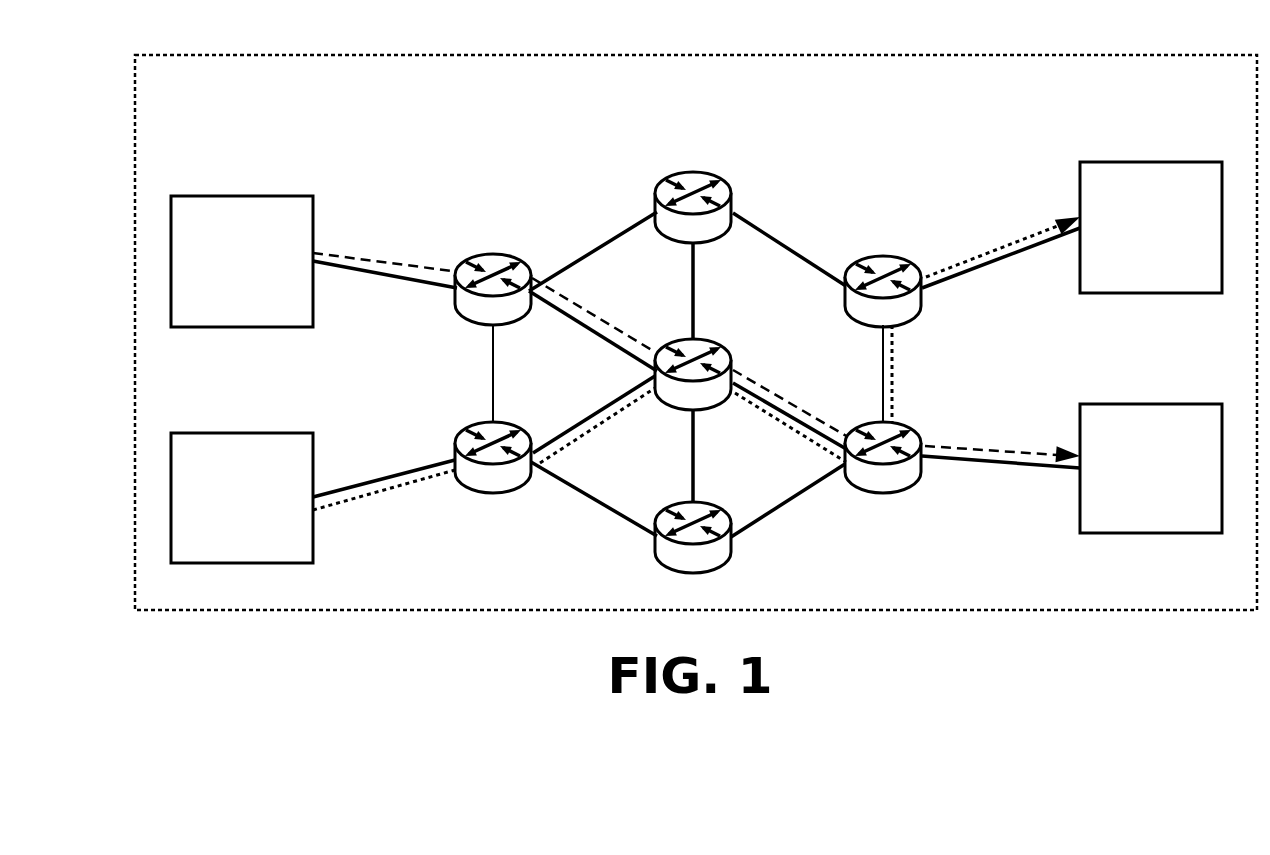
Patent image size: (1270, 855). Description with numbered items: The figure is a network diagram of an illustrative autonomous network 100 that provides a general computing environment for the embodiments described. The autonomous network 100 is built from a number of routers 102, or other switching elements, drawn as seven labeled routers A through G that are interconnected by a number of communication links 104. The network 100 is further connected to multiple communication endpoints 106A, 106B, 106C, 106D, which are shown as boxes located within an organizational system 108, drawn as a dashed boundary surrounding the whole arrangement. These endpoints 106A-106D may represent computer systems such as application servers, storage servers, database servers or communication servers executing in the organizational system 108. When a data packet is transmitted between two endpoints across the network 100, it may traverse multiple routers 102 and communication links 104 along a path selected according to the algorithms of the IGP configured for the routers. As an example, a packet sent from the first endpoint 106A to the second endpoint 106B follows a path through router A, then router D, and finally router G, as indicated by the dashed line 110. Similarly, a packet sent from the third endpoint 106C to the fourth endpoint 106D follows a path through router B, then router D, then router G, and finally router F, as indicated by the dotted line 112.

The autonomous network 100 is at (696, 338).
The router 102 is at (690, 181).
The communication link 104 is at (596, 250).
The endpoint 1 106A is at (272, 305).
The endpoint 2 106B is at (1181, 512).
The endpoint 3 106C is at (272, 541).
The endpoint 4 106D is at (1181, 270).
The organizational system 108 is at (471, 88).
The line 110 is at (410, 268).
The line 112 is at (389, 489).